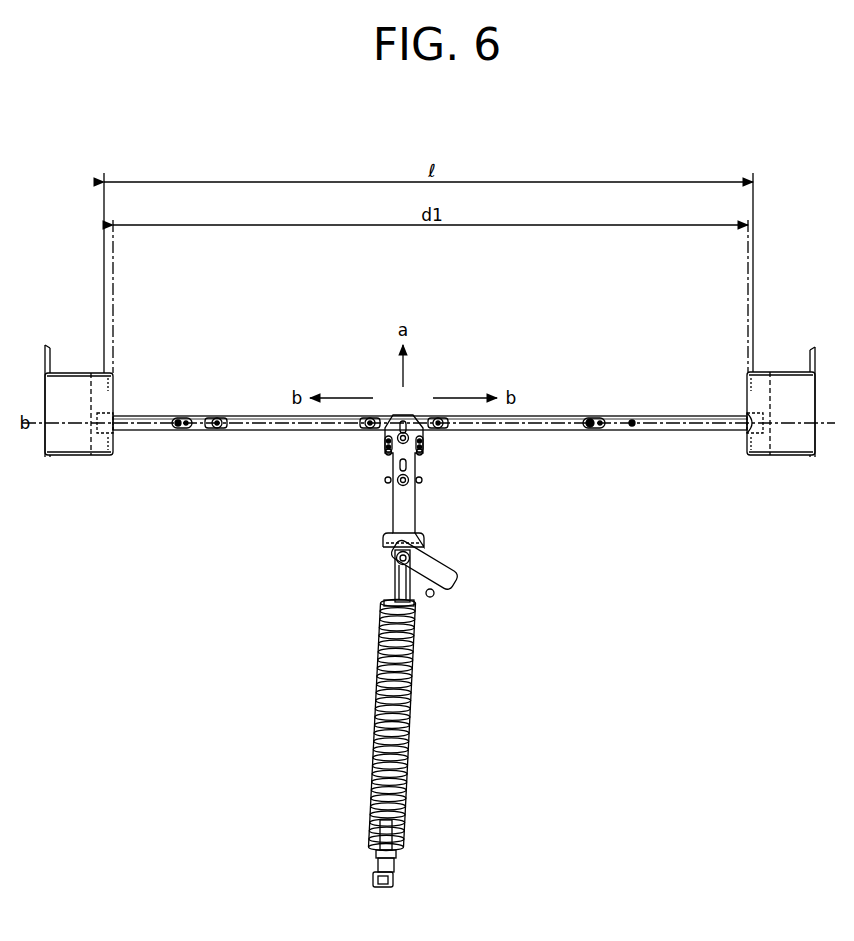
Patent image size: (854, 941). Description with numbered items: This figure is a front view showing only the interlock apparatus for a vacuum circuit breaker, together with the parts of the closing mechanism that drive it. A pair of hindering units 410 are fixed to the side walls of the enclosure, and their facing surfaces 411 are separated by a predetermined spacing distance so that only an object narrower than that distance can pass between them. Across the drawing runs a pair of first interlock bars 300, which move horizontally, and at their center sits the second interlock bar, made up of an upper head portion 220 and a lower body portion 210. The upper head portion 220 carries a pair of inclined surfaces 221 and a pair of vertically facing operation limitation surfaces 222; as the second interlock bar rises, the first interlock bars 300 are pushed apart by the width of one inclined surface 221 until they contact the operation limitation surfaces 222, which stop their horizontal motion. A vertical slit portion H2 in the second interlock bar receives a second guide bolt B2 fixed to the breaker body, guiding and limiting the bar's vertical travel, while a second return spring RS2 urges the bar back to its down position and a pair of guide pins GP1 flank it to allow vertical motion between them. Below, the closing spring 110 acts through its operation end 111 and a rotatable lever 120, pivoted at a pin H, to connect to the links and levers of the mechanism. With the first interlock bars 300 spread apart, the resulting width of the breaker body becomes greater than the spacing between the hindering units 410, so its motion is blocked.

The closing spring 110 is at (410, 750).
The operation end of the closing spring 111 is at (394, 580).
The lever 120 is at (446, 588).
The lower body portion 210 is at (409, 412).
The upper head portion 220 is at (418, 415).
The inclined surface 221 is at (393, 412).
The operation limitation surface 222 is at (381, 440).
The first interlock bar 300 is at (247, 430).
The hindering unit 410 is at (761, 364).
The facing surface of the hindering unit 411 is at (745, 392).
The pin H is at (396, 556).
The vertical slit portion H2 is at (407, 466).
The second guide bolt B2 is at (410, 481).
The second return spring RS2 is at (424, 447).
The guide pin GP1 is at (385, 482).